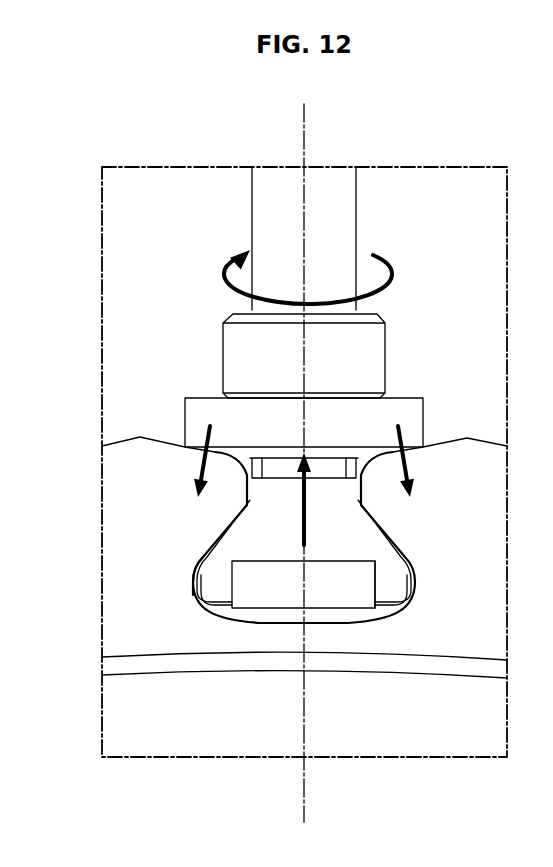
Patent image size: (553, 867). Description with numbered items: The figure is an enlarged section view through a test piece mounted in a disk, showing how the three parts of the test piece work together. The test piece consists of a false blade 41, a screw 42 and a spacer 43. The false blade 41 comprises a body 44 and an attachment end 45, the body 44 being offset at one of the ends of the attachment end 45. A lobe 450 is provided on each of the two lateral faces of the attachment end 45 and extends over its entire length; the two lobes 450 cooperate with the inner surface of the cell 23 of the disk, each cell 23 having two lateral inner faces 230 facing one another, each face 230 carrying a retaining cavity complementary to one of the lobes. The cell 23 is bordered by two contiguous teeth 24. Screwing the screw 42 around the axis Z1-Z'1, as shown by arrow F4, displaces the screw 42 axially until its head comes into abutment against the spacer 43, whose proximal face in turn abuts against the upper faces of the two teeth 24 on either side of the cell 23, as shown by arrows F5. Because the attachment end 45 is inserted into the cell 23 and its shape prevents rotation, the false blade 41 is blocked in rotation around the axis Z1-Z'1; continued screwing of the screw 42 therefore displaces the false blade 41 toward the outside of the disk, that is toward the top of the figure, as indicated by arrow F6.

The false blade 41 is at (388, 148).
The screw 42 is at (360, 357).
The spacer 43 is at (410, 417).
The body 44 is at (342, 233).
The attachment end 45 is at (358, 547).
The lobe 450 is at (390, 580).
The cell 23 is at (358, 614).
The teeth 24 is at (138, 465).
The lateral inner face 230 is at (200, 585).
The axis end Z1 is at (300, 124).
The axis end Z'1 is at (261, 820).
The screwing arrow F4 is at (294, 275).
The abutment arrows F5 is at (303, 461).
The displacement arrow F6 is at (315, 499).